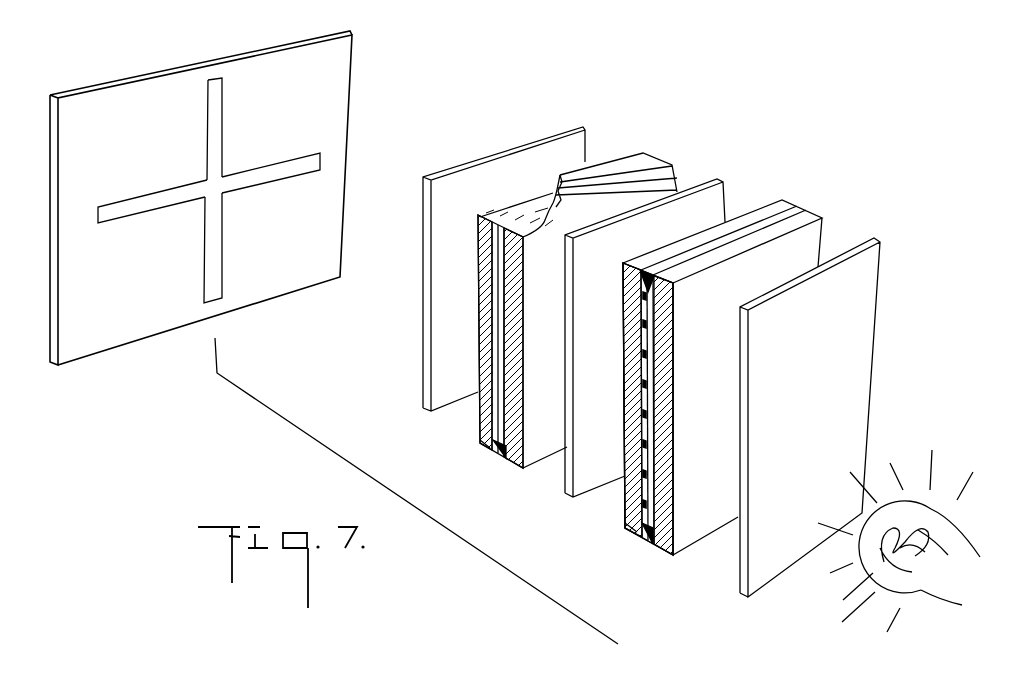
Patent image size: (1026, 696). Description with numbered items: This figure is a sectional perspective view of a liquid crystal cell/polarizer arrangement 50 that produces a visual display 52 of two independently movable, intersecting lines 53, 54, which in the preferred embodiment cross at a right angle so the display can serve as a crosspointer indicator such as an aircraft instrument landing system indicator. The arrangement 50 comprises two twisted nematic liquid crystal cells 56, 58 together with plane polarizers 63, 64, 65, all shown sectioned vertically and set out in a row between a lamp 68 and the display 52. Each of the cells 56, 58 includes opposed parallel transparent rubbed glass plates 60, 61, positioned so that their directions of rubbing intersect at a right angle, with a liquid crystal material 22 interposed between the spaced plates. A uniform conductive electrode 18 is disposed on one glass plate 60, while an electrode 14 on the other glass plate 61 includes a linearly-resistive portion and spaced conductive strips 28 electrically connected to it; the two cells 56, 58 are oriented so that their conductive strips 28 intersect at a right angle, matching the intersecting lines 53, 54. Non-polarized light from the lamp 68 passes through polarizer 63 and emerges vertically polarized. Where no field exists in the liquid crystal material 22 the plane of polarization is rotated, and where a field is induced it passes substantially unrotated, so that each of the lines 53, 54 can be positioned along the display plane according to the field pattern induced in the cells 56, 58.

The electrode 14 is at (620, 454).
The uniform conductive electrode 18 is at (517, 413).
The liquid crystal material 22 is at (621, 161).
The conductive strips 28 is at (533, 211).
The liquid crystal cell/polarizer arrangement 50 is at (808, 189).
The visual display 52 is at (338, 83).
The line 53 is at (216, 80).
The line 54 is at (310, 161).
The liquid crystal cell 56 is at (848, 231).
The liquid crystal cell 58 is at (692, 162).
The glass plate 60 is at (560, 364).
The glass plate 61 is at (481, 432).
The plane polarizer 63 is at (867, 313).
The plane polarizer 64 is at (713, 200).
The plane polarizer 65 is at (561, 137).
The lamp 68 is at (896, 541).